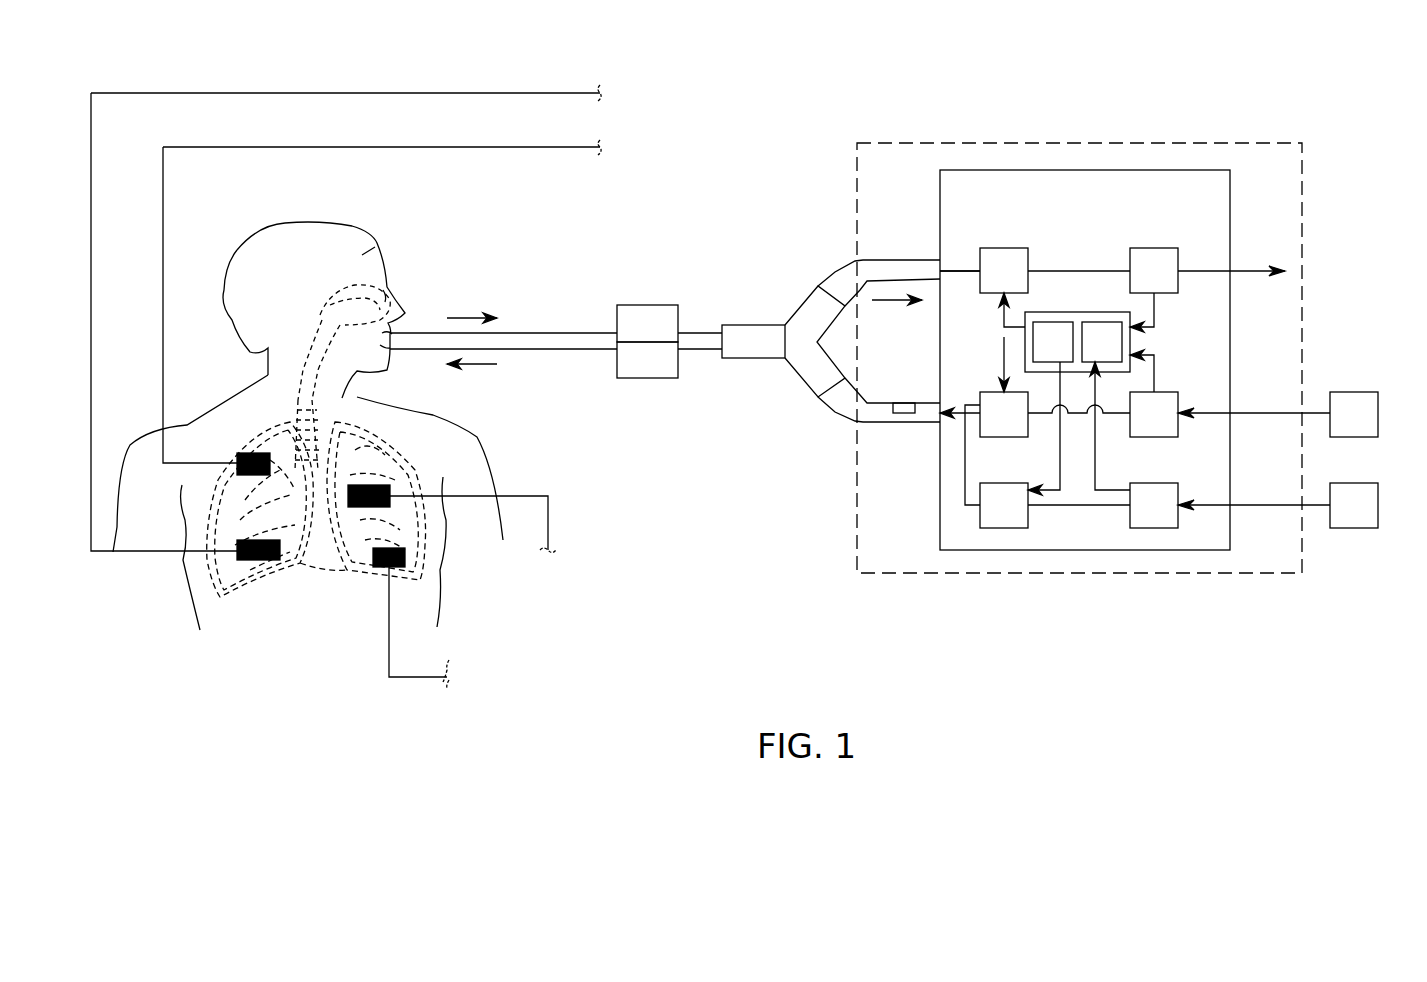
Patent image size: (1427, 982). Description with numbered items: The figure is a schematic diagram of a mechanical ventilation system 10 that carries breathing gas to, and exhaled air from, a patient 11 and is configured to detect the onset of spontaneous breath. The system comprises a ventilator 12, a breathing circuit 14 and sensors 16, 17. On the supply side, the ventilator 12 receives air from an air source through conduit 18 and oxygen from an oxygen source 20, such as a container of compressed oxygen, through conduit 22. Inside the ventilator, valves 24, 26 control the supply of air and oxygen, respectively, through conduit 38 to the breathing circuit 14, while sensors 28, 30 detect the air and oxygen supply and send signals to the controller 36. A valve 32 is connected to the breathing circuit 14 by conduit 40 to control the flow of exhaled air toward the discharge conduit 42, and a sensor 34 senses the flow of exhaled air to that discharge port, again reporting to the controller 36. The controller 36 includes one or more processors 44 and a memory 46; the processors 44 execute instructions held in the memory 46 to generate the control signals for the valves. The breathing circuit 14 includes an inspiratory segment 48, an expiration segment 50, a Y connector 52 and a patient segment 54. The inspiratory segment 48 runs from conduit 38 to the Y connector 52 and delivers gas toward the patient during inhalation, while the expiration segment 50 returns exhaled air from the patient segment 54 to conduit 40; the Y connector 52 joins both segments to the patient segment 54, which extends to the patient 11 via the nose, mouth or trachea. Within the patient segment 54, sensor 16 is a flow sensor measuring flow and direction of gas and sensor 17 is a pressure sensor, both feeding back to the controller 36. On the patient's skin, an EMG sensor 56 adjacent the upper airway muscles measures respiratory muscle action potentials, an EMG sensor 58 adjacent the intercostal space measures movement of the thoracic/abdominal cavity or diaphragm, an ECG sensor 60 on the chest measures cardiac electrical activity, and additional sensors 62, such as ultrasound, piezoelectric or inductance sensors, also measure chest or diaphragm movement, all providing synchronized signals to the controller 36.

The mechanical ventilation system 10 is at (952, 103).
The patient 11 is at (405, 243).
The ventilator 12 is at (1305, 190).
The breathing circuit 14 is at (785, 295).
The sensor 16 is at (647, 305).
The sensor 17 is at (647, 378).
The conduit 18 is at (1312, 412).
The oxygen source 20 is at (1380, 502).
The conduit 22 is at (1312, 515).
The valve 24 is at (985, 393).
The valve 26 is at (1003, 530).
The sensor 28 is at (1178, 392).
The sensor 30 is at (1154, 530).
The valve 32 is at (1005, 248).
The sensor 34 is at (1160, 248).
The controller 36 is at (1053, 312).
The conduit 38 is at (965, 470).
The conduit 40 is at (958, 268).
The discharge conduit 42 is at (1255, 271).
The processor 44 is at (1100, 312).
The memory 46 is at (1028, 340).
The inspiratory segment 48 is at (898, 422).
The expiration segment 50 is at (898, 258).
The Y connector 52 is at (752, 358).
The patient segment 54 is at (546, 332).
The EMG sensor 56 is at (250, 453).
The EMG sensor 58 is at (240, 552).
The ECG sensor 60 is at (402, 448).
The additional sensor 62 is at (405, 558).